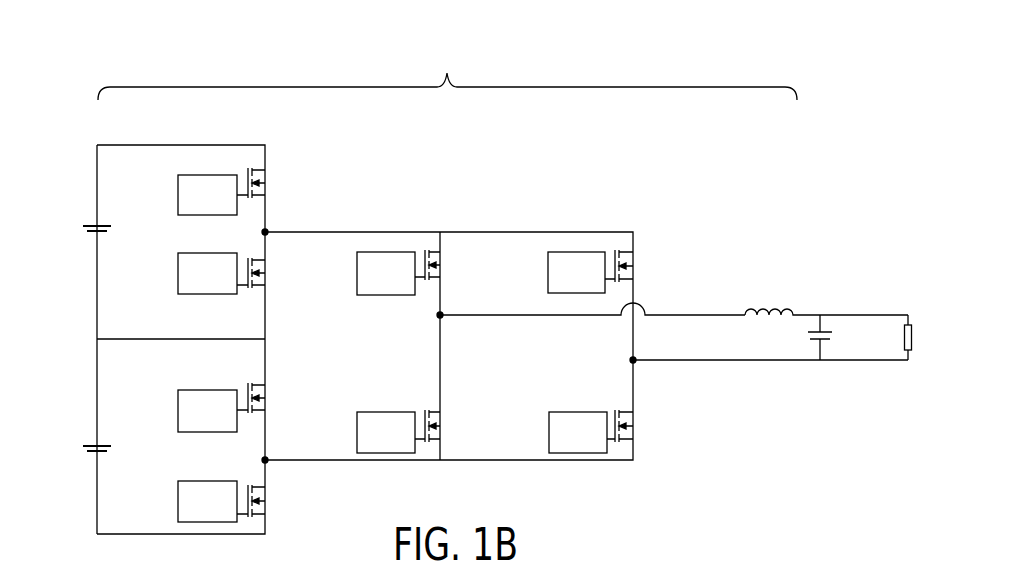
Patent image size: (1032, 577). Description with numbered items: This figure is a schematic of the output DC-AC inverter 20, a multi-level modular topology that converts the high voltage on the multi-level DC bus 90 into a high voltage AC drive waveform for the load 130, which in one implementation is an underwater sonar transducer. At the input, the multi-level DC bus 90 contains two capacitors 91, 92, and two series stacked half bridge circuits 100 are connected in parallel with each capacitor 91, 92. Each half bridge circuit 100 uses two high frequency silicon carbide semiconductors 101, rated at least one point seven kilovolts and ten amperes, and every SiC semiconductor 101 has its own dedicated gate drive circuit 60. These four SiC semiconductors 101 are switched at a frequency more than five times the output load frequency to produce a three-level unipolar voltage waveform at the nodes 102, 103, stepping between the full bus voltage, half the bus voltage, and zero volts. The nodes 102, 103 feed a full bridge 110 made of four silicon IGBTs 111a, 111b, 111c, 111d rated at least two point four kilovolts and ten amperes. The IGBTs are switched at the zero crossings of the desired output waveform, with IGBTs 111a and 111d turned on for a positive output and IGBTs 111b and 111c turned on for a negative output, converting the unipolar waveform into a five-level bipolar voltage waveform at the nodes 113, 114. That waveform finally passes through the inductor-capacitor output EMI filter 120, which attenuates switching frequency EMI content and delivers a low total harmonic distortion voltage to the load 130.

The output DC-AC inverter 20 is at (447, 68).
The multi-level DC bus 90 is at (92, 144).
The capacitor 91 is at (85, 227).
The capacitor 92 is at (85, 447).
The half bridge circuit 100 is at (268, 141).
The gate drive circuit 60 is at (185, 175).
The SiC semiconductor 101 is at (265, 190).
The node 102 is at (265, 232).
The node 103 is at (265, 460).
The full bridge 110 is at (495, 207).
The IGBT 111a is at (440, 273).
The IGBT 111b is at (633, 275).
The IGBT 111c is at (440, 433).
The IGBT 111d is at (633, 435).
The node 113 is at (440, 315).
The node 114 is at (633, 360).
The output EMI filter 120 is at (765, 305).
The load 130 is at (908, 307).